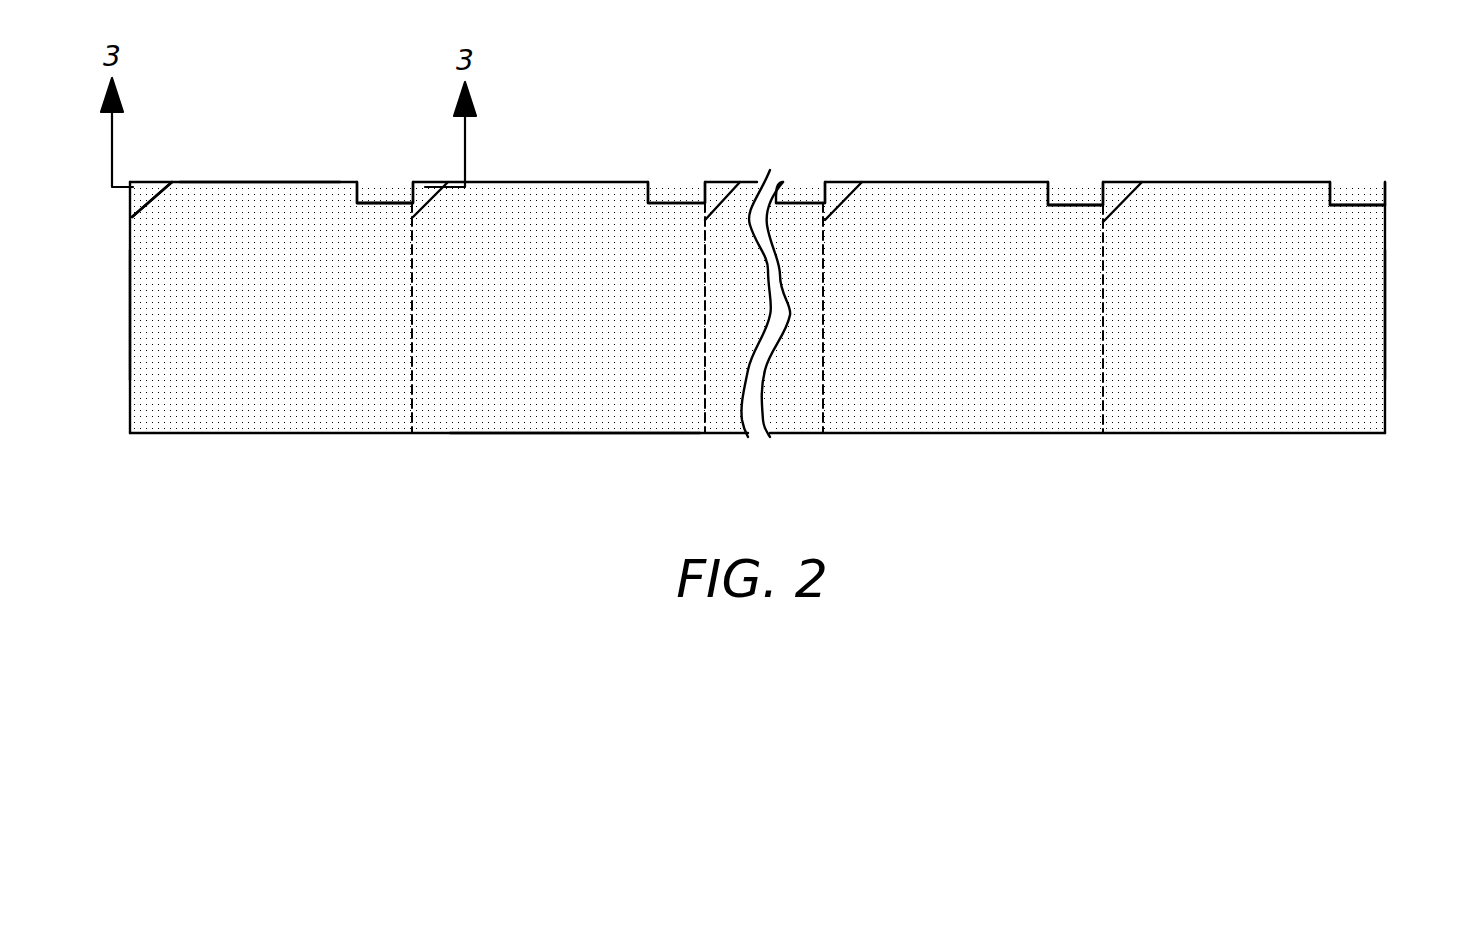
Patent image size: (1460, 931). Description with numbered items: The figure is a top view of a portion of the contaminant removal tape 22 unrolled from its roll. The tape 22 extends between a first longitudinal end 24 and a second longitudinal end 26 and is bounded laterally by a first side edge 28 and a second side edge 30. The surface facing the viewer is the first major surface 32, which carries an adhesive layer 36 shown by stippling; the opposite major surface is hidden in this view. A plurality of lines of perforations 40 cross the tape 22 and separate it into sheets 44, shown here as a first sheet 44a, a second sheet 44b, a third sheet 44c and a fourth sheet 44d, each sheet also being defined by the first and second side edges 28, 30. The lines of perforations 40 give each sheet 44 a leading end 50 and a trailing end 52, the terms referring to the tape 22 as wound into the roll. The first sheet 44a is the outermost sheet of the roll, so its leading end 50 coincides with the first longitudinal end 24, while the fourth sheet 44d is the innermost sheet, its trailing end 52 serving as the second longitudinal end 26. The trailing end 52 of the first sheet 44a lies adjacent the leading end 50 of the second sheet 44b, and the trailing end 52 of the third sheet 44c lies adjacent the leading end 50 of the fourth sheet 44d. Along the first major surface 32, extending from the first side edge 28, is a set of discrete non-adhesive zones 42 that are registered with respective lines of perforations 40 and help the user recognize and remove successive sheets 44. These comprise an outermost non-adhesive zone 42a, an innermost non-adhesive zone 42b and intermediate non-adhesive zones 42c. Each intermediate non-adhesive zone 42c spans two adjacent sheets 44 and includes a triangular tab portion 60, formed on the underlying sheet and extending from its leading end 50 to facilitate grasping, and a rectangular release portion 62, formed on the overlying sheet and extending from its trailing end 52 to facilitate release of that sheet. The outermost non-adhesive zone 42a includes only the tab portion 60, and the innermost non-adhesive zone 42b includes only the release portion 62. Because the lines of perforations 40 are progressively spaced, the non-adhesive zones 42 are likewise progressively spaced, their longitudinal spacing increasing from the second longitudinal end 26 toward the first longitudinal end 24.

The contaminant removal tape 22 is at (708, 90).
The first longitudinal end 24 is at (132, 288).
The second longitudinal end 26 is at (1386, 243).
The first side edge 28 is at (233, 180).
The second side edge 30 is at (588, 434).
The first major surface 32 is at (580, 202).
The adhesive layer 36 is at (926, 204).
The lines of perforations 40 is at (703, 402).
The non-adhesive zones 42 is at (668, 189).
The outermost non-adhesive zone 42a is at (152, 174).
The innermost non-adhesive zone 42b is at (1343, 189).
The intermediate non-adhesive zone 42c is at (393, 180).
The sheets 44 is at (530, 420).
The first sheet 44a is at (290, 184).
The second sheet 44b is at (510, 183).
The third sheet 44c is at (958, 420).
The fourth sheet 44d is at (1250, 420).
The leading end 50 is at (715, 242).
The trailing end 52 is at (392, 402).
The tab portion 60 is at (137, 198).
The release portion 62 is at (372, 193).